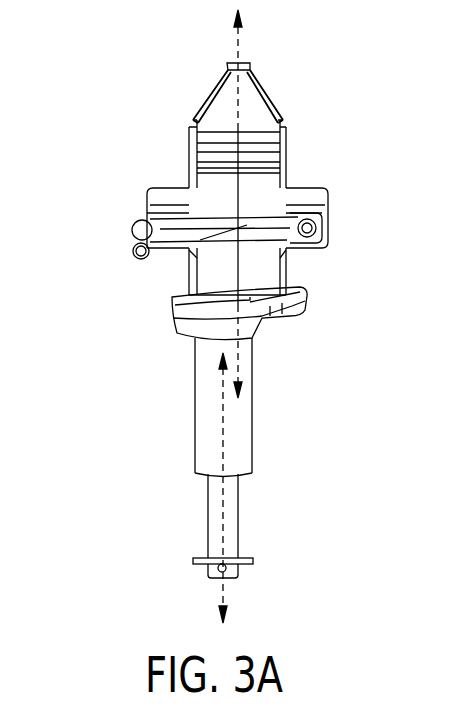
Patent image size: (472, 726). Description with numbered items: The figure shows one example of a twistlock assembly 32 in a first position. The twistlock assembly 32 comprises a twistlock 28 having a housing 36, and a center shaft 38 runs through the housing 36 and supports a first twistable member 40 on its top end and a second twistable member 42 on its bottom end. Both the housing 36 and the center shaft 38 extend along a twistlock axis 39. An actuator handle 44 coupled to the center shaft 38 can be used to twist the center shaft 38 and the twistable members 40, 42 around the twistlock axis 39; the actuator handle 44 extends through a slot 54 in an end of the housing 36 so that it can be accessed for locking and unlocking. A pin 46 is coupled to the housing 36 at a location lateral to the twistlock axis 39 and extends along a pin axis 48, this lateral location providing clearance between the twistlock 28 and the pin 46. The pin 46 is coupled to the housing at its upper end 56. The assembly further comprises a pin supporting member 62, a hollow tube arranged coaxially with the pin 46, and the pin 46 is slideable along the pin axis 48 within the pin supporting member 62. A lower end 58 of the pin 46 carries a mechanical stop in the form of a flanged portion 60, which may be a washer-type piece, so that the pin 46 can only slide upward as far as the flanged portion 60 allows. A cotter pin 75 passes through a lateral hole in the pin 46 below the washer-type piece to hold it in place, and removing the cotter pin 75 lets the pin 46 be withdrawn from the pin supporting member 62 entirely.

The twistlock 28 is at (177, 172).
The twistlock assembly 32 is at (363, 120).
The housing 36 is at (283, 274).
The center shaft 38 is at (247, 225).
The twistlock axis 39 is at (238, 89).
The first twistable member 40 is at (258, 88).
The second twistable member 42 is at (297, 322).
The actuator handle 44 is at (132, 233).
The pin 46 is at (239, 518).
The pin axis 48 is at (223, 422).
The slot 54 is at (318, 231).
The upper end 56 is at (460, 274).
The lower end 58 is at (172, 561).
The flanged portion 60 is at (248, 556).
The pin supporting member 62 is at (253, 405).
The cotter pin 75 is at (226, 572).